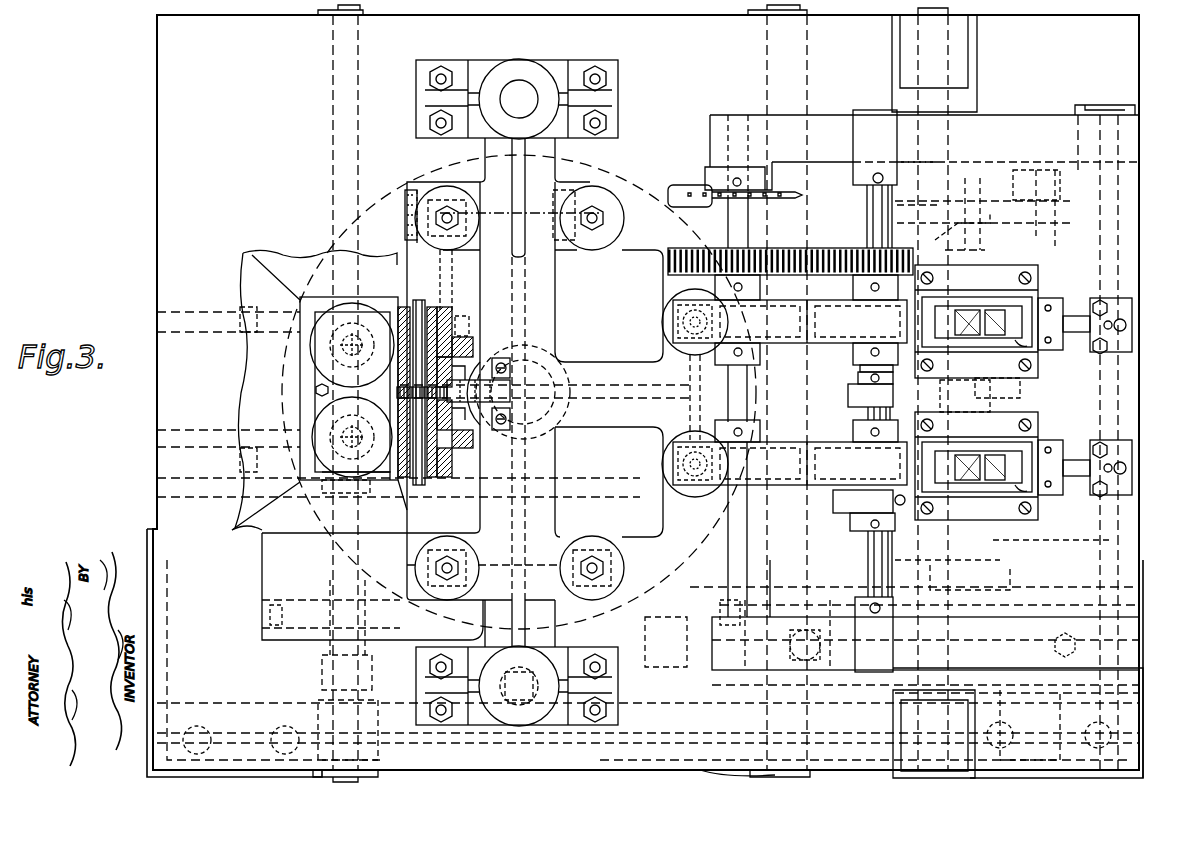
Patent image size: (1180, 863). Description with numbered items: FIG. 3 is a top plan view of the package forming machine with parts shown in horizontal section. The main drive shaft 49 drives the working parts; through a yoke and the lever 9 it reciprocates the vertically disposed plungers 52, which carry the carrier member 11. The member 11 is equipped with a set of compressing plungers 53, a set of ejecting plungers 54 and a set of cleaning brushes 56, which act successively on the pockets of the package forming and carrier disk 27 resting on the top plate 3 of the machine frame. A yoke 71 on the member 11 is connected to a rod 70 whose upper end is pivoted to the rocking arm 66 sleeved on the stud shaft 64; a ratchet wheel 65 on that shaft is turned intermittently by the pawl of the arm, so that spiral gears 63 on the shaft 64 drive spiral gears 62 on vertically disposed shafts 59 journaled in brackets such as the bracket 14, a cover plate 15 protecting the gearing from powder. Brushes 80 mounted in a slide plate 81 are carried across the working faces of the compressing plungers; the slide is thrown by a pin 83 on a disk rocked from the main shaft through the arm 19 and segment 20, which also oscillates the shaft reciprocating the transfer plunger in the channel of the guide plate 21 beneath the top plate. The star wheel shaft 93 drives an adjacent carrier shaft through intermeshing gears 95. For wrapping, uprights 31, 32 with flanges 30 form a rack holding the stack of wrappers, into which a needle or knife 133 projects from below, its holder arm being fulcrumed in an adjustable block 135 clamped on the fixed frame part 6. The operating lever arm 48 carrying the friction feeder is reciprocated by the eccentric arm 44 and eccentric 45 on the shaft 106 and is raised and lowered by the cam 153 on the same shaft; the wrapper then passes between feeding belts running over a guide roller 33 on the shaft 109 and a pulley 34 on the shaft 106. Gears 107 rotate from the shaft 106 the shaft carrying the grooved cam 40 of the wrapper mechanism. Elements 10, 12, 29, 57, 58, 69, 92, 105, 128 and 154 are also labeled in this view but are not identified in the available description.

The top plate 3 is at (156, 506).
The fixed part of the frame work 6 is at (1130, 222).
The lever 9 is at (627, 676).
The bolts 10 is at (478, 725).
The carrier member 11 is at (545, 290).
The work holder corner 12 is at (300, 485).
The bracket 14 is at (430, 312).
The cover plate 15 is at (316, 392).
The arm 19 is at (830, 595).
The segment 20 is at (255, 633).
The guide plate 21 is at (220, 496).
The package forming and carrier disk 27 is at (648, 188).
The frame end 29 is at (1128, 146).
The flanges 30 is at (979, 384).
The upright 31 is at (1047, 298).
The upright 32 is at (930, 272).
The guide roller 33 is at (858, 366).
The pulley 34 is at (762, 432).
The cam 40 is at (1030, 218).
The eccentric arm 44 is at (824, 520).
The eccentric 45 is at (858, 535).
The operating lever arm 48 is at (855, 400).
The main drive shaft 49 is at (737, 764).
The vertically disposed plunger 52 is at (520, 745).
The compressing plunger 53 is at (455, 222).
The ejecting plunger 54 is at (690, 320).
The cleaning brush 56 is at (440, 565).
The work fixture 57 is at (245, 278).
The roller 58 is at (312, 350).
The vertically disposed shaft 59 is at (355, 391).
The spiral gear 62 is at (360, 391).
The spiral gear 63 is at (458, 340).
The stud shaft 64 is at (417, 375).
The ratchet wheel 65 is at (430, 380).
The arm 66 is at (462, 476).
The bar 69 is at (512, 400).
The rod 70 is at (511, 400).
The yoke 71 is at (500, 358).
The brush 80 is at (416, 244).
The slide plate 81 is at (405, 200).
The pin 83 is at (496, 183).
The bracket 92 is at (373, 675).
The shaft 93 is at (880, 775).
The intermeshing gears 95 is at (990, 258).
The scale 105 is at (735, 204).
The shaft 106 is at (734, 216).
The gears 107 is at (702, 247).
The shaft 109 is at (858, 216).
The collar 128 is at (830, 494).
The needle or knife 133 is at (1040, 352).
The block 135 is at (1110, 356).
The cam 153 is at (858, 380).
The bracket 154 is at (646, 636).